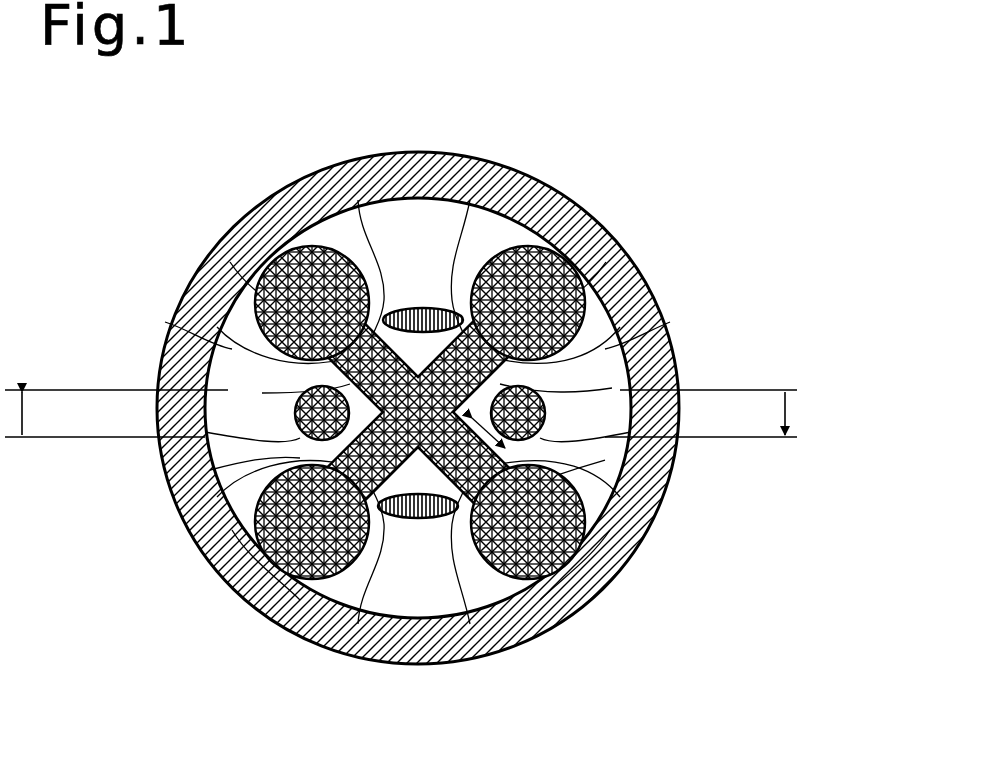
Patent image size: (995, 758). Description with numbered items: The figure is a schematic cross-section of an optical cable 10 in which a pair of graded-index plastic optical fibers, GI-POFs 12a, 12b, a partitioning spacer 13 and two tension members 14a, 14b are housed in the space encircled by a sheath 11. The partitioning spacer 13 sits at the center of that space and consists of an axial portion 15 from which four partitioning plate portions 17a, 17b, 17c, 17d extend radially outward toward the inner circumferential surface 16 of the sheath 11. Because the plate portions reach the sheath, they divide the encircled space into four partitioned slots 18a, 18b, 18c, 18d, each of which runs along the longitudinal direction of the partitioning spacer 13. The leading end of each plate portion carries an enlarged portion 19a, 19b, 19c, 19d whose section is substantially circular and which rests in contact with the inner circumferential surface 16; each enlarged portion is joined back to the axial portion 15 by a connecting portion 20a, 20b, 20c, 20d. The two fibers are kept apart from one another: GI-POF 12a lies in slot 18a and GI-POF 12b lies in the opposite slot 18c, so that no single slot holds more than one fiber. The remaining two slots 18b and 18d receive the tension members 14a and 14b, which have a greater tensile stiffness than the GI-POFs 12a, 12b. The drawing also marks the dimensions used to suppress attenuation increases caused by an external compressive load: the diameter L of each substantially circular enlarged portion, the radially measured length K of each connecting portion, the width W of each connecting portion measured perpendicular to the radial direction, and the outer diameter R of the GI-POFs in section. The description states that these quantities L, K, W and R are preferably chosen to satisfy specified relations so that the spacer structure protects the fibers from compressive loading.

The optical cable 10 is at (686, 196).
The sheath 11 is at (678, 452).
The GI-POF 12a is at (292, 415).
The GI-POF 12b is at (540, 423).
The partitioning spacer 13 is at (462, 292).
The tension member 14a is at (423, 308).
The tension member 14b is at (418, 518).
The axial portion 15 is at (228, 392).
The inner circumferential surface 16 is at (190, 282).
The partitioning plate portion 17a is at (180, 527).
The partitioning plate portion 17b is at (353, 212).
The partitioning plate portion 17c is at (668, 346).
The partitioning plate portion 17d is at (648, 537).
The partitioned slot 18a is at (230, 460).
The partitioned slot 18b is at (421, 214).
The partitioned slot 18c is at (660, 398).
The partitioned slot 18d is at (420, 618).
The enlarged portion 19a is at (230, 595).
The enlarged portion 19b is at (268, 262).
The enlarged portion 19c is at (590, 216).
The enlarged portion 19d is at (590, 596).
The connecting portion 20a is at (337, 646).
The connecting portion 20b is at (165, 327).
The connecting portion 20c is at (643, 300).
The connecting portion 20d is at (512, 640).
The width of connecting portion W is at (440, 462).
The length of connecting portion K is at (664, 493).
The diameter of enlarged portion L is at (625, 560).
The outer diameter of GI-POF R is at (404, 413).